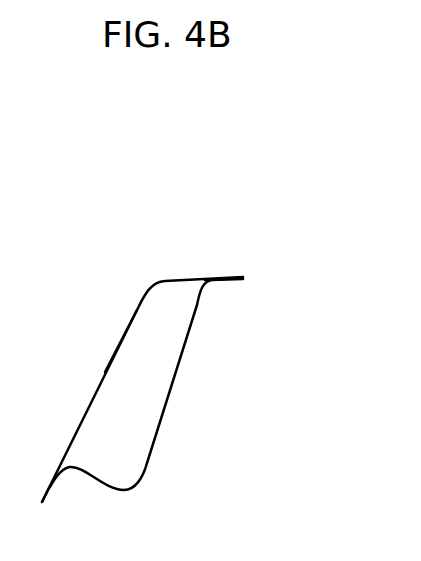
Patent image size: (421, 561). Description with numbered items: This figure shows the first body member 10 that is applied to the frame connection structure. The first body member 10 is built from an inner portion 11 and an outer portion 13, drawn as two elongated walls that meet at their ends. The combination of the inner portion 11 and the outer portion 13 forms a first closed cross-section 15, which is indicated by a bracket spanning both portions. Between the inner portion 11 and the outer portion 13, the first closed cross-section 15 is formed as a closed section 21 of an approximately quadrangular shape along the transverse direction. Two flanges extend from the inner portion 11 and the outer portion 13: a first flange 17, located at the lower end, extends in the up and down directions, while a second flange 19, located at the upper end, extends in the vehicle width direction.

The first body member 10 is at (169, 164).
The inner portion 11 is at (165, 412).
The outer portion 13 is at (84, 412).
The first closed cross-section 15 is at (142, 389).
The first flange 17 is at (48, 501).
The second flange 19 is at (223, 273).
The closed section 21 is at (149, 331).